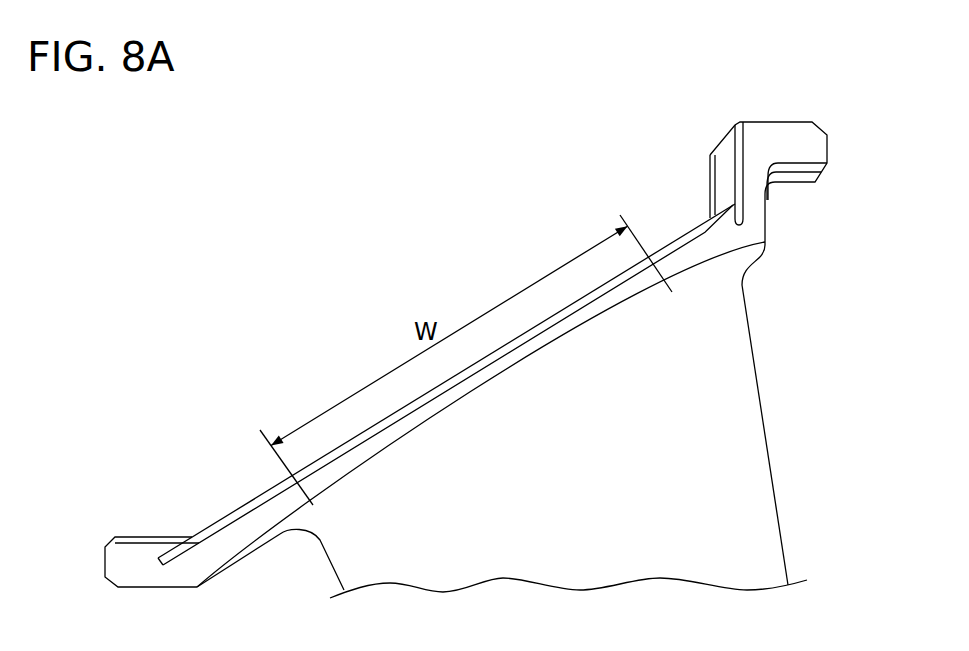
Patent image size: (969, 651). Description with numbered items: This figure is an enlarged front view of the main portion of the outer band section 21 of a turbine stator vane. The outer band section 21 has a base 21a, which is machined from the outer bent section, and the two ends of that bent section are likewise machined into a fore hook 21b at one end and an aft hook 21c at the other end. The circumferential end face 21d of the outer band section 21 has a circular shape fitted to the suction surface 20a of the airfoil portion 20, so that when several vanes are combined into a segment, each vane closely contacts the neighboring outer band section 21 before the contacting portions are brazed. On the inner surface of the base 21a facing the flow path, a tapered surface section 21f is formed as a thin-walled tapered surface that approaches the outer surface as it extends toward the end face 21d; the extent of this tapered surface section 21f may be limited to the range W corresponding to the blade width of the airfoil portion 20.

The airfoil portion 20 is at (775, 470).
The suction surface 20a is at (760, 523).
The outer band section 21 is at (243, 493).
The base 21a is at (372, 457).
The fore hook 21b is at (130, 548).
The aft hook 21c is at (787, 132).
The end face 21d is at (566, 334).
The tapered surface section 21f is at (462, 396).